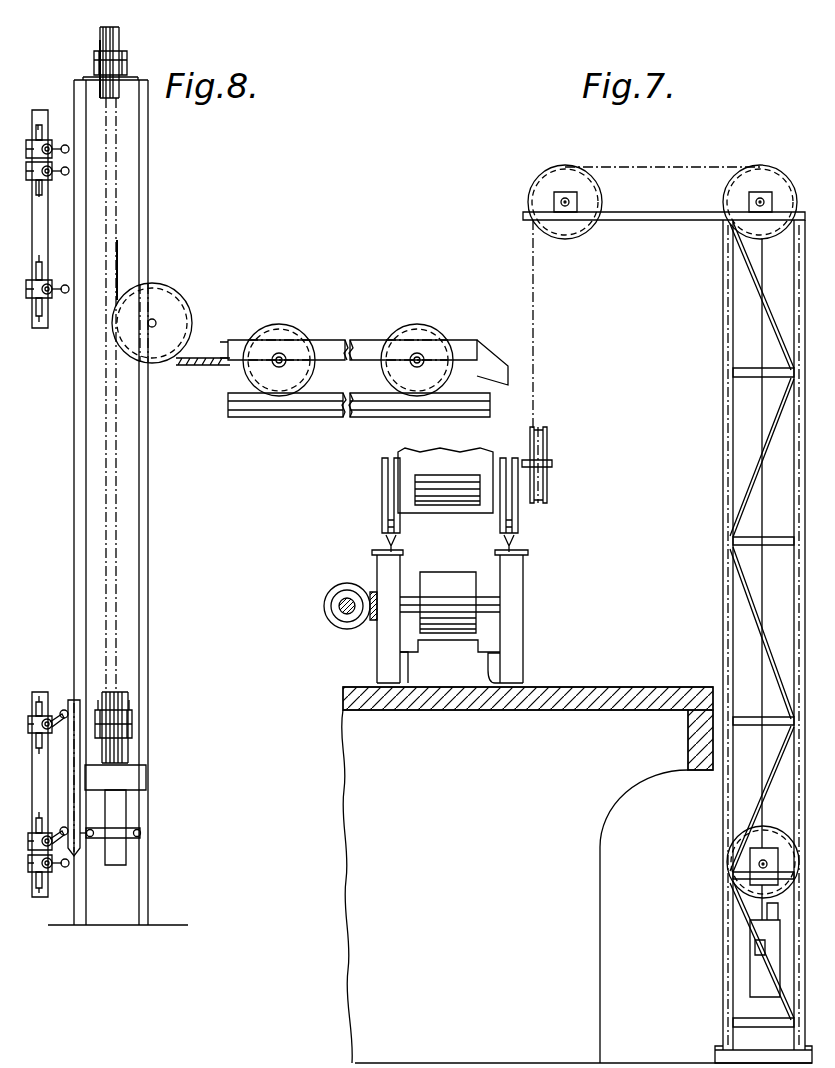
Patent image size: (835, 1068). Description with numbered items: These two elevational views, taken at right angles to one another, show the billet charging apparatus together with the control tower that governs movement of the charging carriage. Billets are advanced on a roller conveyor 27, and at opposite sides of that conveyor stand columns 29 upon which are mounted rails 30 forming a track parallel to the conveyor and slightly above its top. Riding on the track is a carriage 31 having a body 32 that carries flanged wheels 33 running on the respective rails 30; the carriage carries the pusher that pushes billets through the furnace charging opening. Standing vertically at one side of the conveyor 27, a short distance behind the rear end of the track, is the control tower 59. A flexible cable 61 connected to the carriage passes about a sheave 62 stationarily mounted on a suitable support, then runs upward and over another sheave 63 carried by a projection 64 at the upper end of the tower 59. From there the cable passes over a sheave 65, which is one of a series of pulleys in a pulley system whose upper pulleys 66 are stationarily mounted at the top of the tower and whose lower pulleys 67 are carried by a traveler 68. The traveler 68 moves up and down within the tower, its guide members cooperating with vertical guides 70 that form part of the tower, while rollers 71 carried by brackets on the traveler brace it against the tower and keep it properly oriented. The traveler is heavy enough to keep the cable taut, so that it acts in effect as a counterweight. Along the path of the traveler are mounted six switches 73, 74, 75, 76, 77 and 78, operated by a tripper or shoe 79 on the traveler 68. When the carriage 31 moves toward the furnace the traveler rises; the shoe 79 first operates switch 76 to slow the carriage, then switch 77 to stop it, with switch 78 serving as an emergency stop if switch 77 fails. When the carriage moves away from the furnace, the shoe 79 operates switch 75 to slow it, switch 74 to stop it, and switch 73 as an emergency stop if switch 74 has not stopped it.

In FIG. 7, the roller conveyor 27 is at (458, 625).
In FIG. 7, the columns 29 is at (378, 566).
In FIG. 8, the rails 30 is at (310, 410).
In FIG. 7, the rails 30 is at (500, 544).
In FIG. 8, the carriage 31 is at (330, 345).
In FIG. 7, the carriage 31 is at (440, 460).
In FIG. 7, the body 32 is at (487, 509).
In FIG. 8, the flanged wheels 33 is at (275, 330).
In FIG. 7, the flanged wheels 33 is at (393, 492).
In FIG. 7, the control tower 59 is at (722, 438).
In FIG. 8, the cable 61 is at (118, 268).
In FIG. 7, the cable 61 is at (535, 330).
In FIG. 8, the sheave 62 is at (178, 300).
In FIG. 7, the sheave 62 is at (548, 438).
In FIG. 8, the sheave 63 is at (120, 40).
In FIG. 7, the sheave 63 is at (547, 187).
In FIG. 7, the projection 64 is at (653, 221).
In FIG. 7, the sheave 65 is at (774, 172).
In FIG. 8, the upper pulleys 66 is at (100, 37).
In FIG. 7, the upper pulleys 66 is at (750, 172).
In FIG. 8, the lower pulleys 67 is at (128, 700).
In FIG. 7, the lower pulleys 67 is at (742, 846).
In FIG. 8, the traveler 68 is at (116, 803).
In FIG. 7, the traveler 68 is at (752, 951).
In FIG. 8, the vertical guides 70 is at (80, 500).
In FIG. 7, the vertical guides 70 is at (762, 535).
In FIG. 8, the rollers 71 is at (142, 833).
In FIG. 8, the switch 73 is at (50, 878).
In FIG. 8, the switch 74 is at (48, 836).
In FIG. 8, the switch 75 is at (53, 702).
In FIG. 8, the switch 76 is at (50, 300).
In FIG. 8, the switch 77 is at (50, 178).
In FIG. 8, the switch 78 is at (48, 145).
In FIG. 8, the tripper or shoe 79 is at (73, 783).